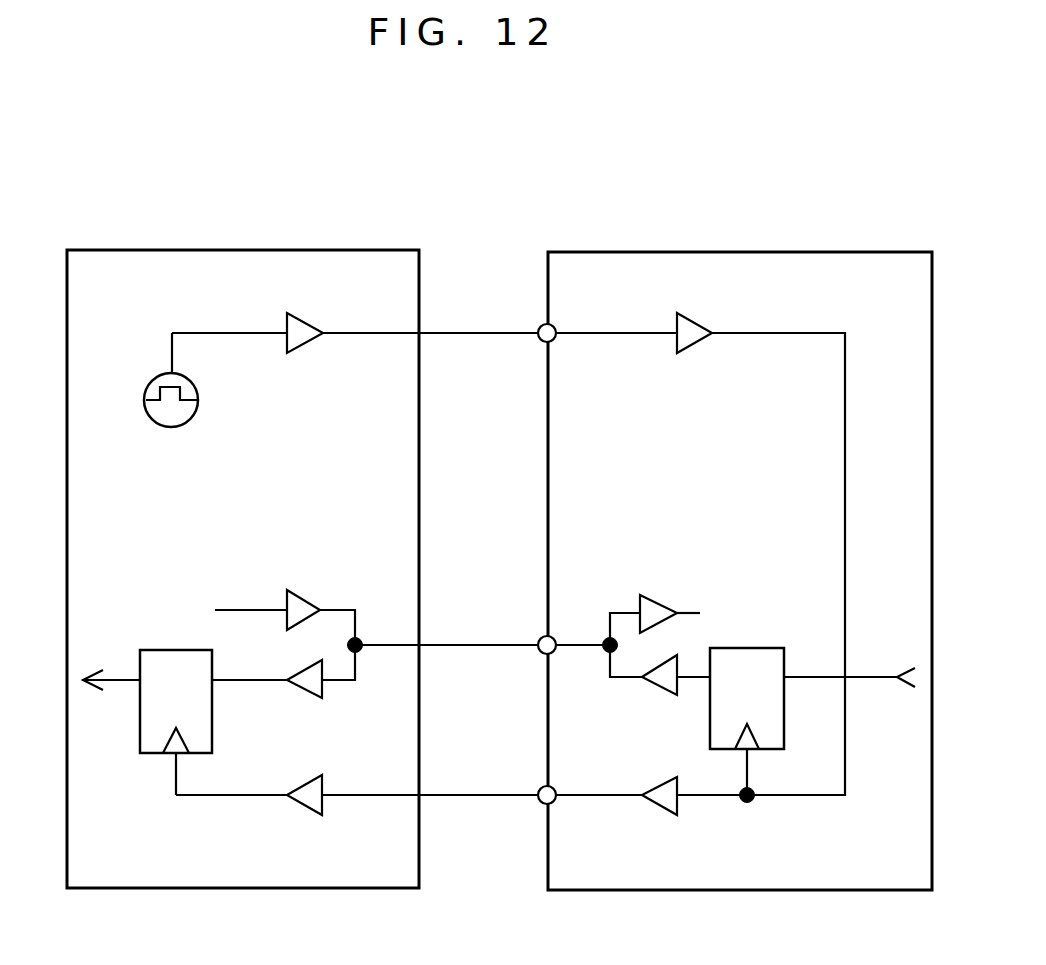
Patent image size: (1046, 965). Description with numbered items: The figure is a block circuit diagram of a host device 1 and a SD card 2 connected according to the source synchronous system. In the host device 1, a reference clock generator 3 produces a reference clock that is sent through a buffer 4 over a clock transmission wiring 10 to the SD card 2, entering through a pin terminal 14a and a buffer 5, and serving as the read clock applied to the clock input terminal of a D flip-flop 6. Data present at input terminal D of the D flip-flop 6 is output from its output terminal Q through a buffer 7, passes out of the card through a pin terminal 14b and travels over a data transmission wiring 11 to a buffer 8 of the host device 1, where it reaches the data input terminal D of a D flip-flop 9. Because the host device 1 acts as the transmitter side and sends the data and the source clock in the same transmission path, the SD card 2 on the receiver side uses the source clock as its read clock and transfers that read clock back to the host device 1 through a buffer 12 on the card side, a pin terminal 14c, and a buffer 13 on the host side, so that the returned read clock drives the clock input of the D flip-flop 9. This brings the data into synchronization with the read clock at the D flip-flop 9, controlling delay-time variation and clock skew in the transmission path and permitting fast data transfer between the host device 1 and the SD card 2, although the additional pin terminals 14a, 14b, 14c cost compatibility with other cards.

The host device 1 is at (263, 250).
The SD card 2 is at (725, 252).
The reference clock generator 3 is at (198, 400).
The buffer (driver) 4 is at (307, 316).
The buffer (receiver) 5 is at (697, 314).
The D flip-flop 6 is at (750, 648).
The buffer 7 is at (653, 692).
The buffer 8 is at (303, 688).
The D flip-flop 9 is at (173, 650).
The clock transmission wiring 10 is at (472, 332).
The data transmission wiring 11 is at (475, 647).
The buffer 12 is at (658, 812).
The buffer 13 is at (305, 812).
The pin terminal 14a is at (540, 340).
The pin terminal 14b is at (543, 638).
The pin terminal 14c is at (540, 802).